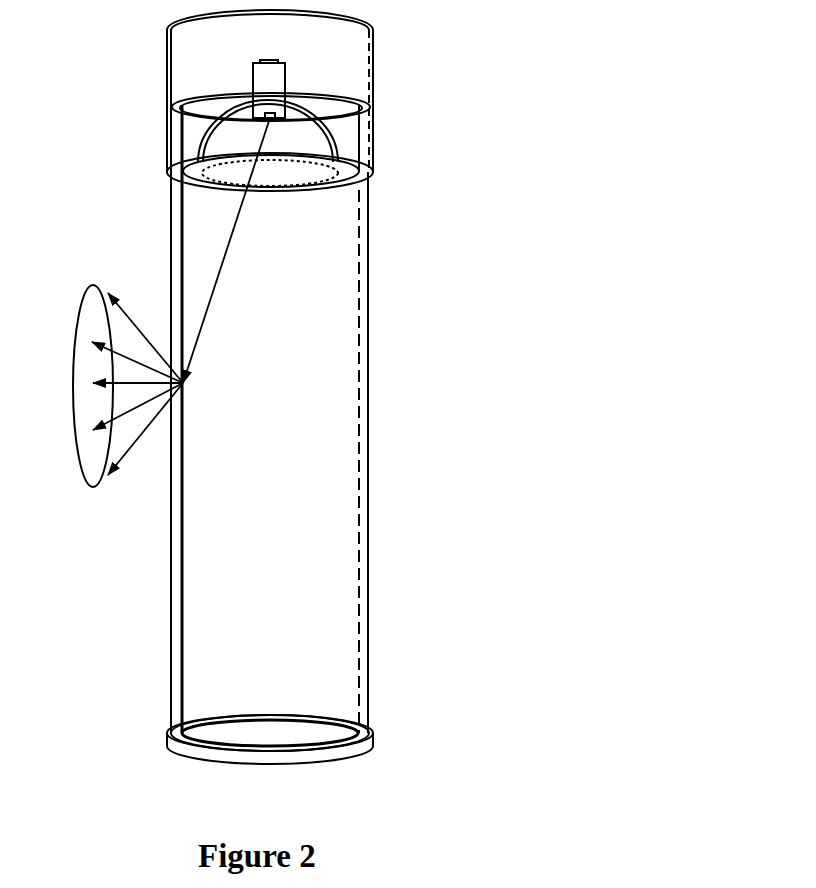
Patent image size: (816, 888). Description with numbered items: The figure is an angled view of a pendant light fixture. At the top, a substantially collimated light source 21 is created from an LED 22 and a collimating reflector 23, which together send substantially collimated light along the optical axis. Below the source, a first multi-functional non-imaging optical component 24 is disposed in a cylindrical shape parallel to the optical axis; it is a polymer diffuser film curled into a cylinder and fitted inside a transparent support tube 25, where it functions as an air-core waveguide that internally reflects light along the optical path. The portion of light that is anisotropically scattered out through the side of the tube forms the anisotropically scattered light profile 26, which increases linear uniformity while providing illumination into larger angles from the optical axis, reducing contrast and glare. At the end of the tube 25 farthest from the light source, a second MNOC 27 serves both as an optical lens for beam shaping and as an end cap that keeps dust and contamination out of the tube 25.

The substantially collimated light source 21 is at (343, 62).
The LED 22 is at (272, 121).
The collimating reflector 23 is at (342, 157).
The first multi-functional non-imaging optical component 24 is at (357, 730).
The transparent support tube 25 is at (367, 418).
The anisotropically scattered light profile 26 is at (95, 285).
The second MNOC 27 is at (348, 748).